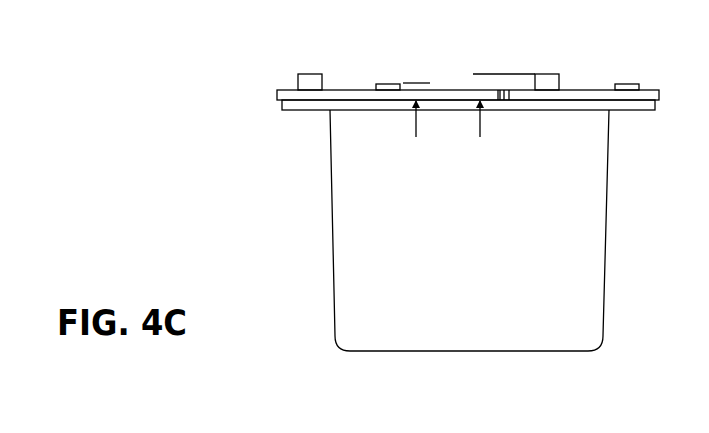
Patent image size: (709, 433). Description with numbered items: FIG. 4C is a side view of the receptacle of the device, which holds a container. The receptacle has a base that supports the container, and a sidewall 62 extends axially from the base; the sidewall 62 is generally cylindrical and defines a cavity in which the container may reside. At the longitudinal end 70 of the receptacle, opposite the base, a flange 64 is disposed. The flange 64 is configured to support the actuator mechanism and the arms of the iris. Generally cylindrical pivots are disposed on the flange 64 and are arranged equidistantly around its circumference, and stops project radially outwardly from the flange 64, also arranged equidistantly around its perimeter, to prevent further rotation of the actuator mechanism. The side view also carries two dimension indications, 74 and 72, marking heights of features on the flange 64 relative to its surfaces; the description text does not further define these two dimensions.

The longitudinal end 70 is at (252, 57).
The sidewall 62 is at (605, 238).
The flange 64 is at (277, 94).
The thickness dimension 74 is at (416, 82).
The height dimension 72 is at (480, 73).